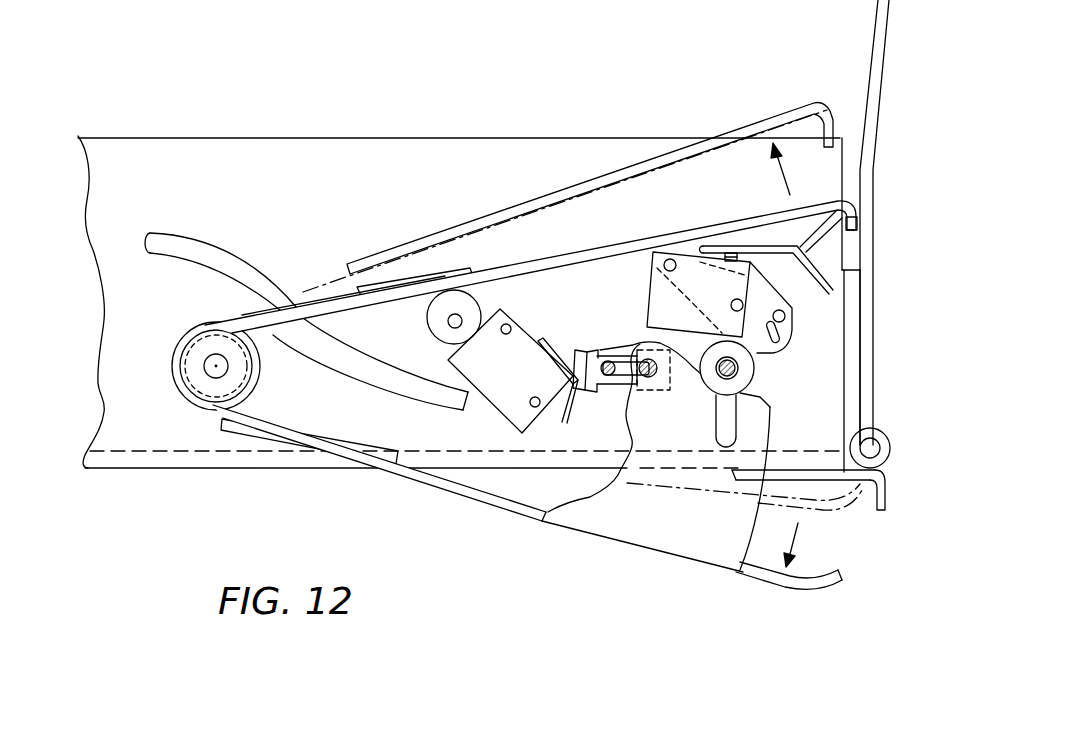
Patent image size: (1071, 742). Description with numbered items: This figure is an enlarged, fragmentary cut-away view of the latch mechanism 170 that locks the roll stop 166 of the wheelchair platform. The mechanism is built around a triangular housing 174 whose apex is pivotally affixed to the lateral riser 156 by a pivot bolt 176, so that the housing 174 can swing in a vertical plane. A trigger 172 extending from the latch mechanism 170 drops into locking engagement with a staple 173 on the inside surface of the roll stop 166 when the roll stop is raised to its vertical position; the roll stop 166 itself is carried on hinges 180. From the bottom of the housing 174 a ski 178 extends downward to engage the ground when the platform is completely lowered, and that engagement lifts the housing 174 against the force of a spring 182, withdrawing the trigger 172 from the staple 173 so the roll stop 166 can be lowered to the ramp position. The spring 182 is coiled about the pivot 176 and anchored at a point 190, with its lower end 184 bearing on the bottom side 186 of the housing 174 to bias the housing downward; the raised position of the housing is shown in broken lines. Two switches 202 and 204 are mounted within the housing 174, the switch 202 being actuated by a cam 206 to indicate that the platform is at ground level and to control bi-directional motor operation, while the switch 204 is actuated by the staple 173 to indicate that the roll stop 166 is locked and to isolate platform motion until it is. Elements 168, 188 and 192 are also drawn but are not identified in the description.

The lateral riser 156 is at (318, 137).
The roll stop 166 is at (876, 103).
The vertical frame member 168 is at (870, 322).
The latch mechanism 170 is at (583, 238).
The trigger 172 is at (862, 212).
The staple 173 is at (843, 230).
The housing 174 is at (705, 456).
The pivot bolt 176 is at (204, 357).
The ski 178 is at (800, 593).
The hinges 180 is at (886, 432).
The spring 182 is at (262, 372).
The lower end of spring 184 is at (350, 445).
The bottom side of housing 186 is at (452, 477).
The support bar 188 is at (465, 290).
The anchor point 190 is at (427, 337).
The lever 192 is at (748, 370).
The switch 202 is at (527, 330).
The switch 204 is at (637, 280).
The cam 206 is at (605, 390).